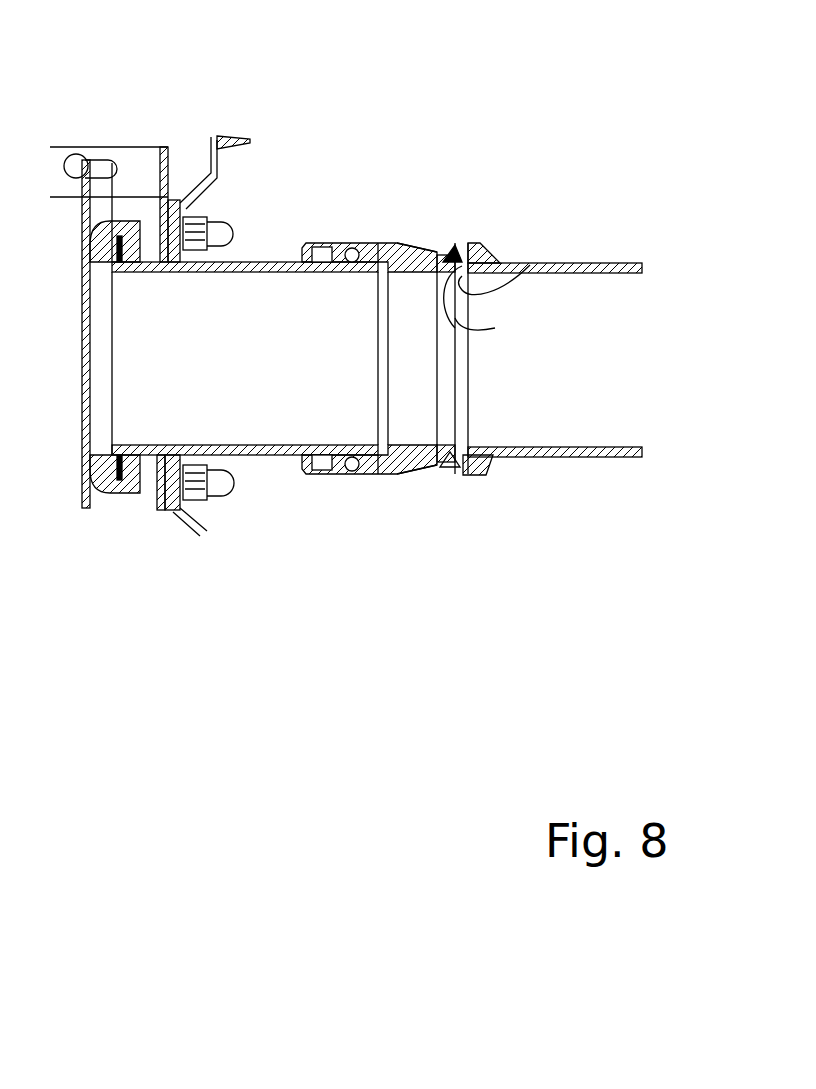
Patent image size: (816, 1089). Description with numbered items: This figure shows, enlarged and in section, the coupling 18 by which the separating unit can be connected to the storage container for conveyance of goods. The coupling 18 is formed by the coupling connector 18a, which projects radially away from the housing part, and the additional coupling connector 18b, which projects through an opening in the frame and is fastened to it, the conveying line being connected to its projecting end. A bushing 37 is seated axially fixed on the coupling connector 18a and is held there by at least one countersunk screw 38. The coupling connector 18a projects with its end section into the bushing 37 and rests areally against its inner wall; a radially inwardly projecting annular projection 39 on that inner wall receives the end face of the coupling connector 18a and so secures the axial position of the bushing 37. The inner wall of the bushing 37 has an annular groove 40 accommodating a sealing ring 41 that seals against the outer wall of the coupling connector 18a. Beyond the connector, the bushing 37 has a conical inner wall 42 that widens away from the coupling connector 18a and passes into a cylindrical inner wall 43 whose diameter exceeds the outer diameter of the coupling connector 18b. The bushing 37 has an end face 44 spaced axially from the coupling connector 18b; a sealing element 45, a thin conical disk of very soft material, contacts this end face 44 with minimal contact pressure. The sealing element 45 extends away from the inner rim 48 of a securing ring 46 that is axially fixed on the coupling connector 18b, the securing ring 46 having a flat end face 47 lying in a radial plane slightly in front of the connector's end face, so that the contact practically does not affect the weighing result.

The coupling 18 is at (311, 520).
The coupling connector 18a is at (240, 257).
The coupling connector 18b is at (505, 256).
The bushing 37 is at (376, 241).
The countersunk screw 38 is at (322, 243).
The annular projection 39 is at (392, 460).
The annular groove 40 is at (353, 243).
The sealing ring 41 is at (344, 472).
The conical inner wall 42 is at (445, 250).
The cylindrical inner wall 43 is at (457, 470).
The end face 44 is at (495, 328).
The sealing element 45 is at (457, 248).
The securing ring 46 is at (463, 473).
The flat end face 47 is at (487, 467).
The inner rim 48 is at (530, 265).